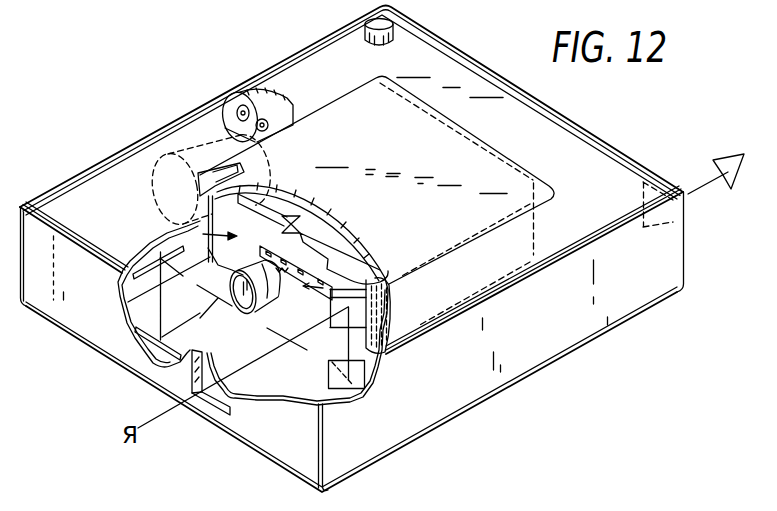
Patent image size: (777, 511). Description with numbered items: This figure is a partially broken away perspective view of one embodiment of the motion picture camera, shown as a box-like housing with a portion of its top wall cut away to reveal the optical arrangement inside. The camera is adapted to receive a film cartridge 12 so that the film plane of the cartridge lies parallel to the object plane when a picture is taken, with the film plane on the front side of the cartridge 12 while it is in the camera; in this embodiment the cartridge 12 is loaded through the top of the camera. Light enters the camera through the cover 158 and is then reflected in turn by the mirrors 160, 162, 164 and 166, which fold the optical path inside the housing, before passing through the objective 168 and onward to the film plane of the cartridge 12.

The cartridge 12 is at (299, 276).
The cover 158 is at (214, 398).
The mirror 160 is at (362, 308).
The mirror 162 is at (370, 382).
The mirror 164 is at (163, 233).
The mirror 166 is at (128, 345).
The objective 168 is at (277, 305).